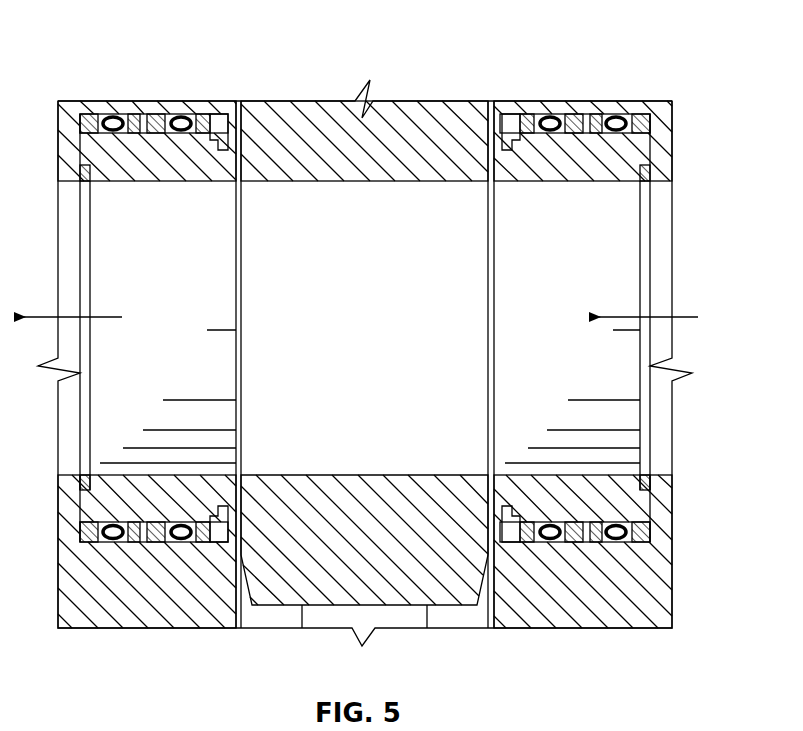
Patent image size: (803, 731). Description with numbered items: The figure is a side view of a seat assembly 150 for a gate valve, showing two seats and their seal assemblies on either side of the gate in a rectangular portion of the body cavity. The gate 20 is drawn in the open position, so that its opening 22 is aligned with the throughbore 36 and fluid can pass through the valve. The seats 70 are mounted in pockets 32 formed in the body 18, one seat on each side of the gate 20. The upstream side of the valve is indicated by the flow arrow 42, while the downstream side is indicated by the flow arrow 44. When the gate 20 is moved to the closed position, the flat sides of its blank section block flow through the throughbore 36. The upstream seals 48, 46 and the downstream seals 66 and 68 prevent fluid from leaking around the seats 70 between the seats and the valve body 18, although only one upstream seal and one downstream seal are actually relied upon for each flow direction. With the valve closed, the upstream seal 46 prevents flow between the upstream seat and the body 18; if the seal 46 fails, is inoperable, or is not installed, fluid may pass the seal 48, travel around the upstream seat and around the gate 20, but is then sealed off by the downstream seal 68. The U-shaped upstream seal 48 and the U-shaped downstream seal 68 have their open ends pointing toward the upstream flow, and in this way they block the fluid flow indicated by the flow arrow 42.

The seat assembly 150 is at (622, 22).
The body 18 is at (650, 578).
The gate 20 is at (432, 118).
The opening 22 is at (252, 347).
The pockets 32 is at (648, 160).
The throughbore 36 is at (615, 275).
The flow arrow 42 is at (662, 317).
The flow arrow 44 is at (50, 317).
The upstream seal 46 is at (616, 117).
The upstream seal 48 is at (550, 117).
The downstream seal 66 is at (112, 117).
The downstream seal 68 is at (180, 117).
The seats 70 is at (157, 170).